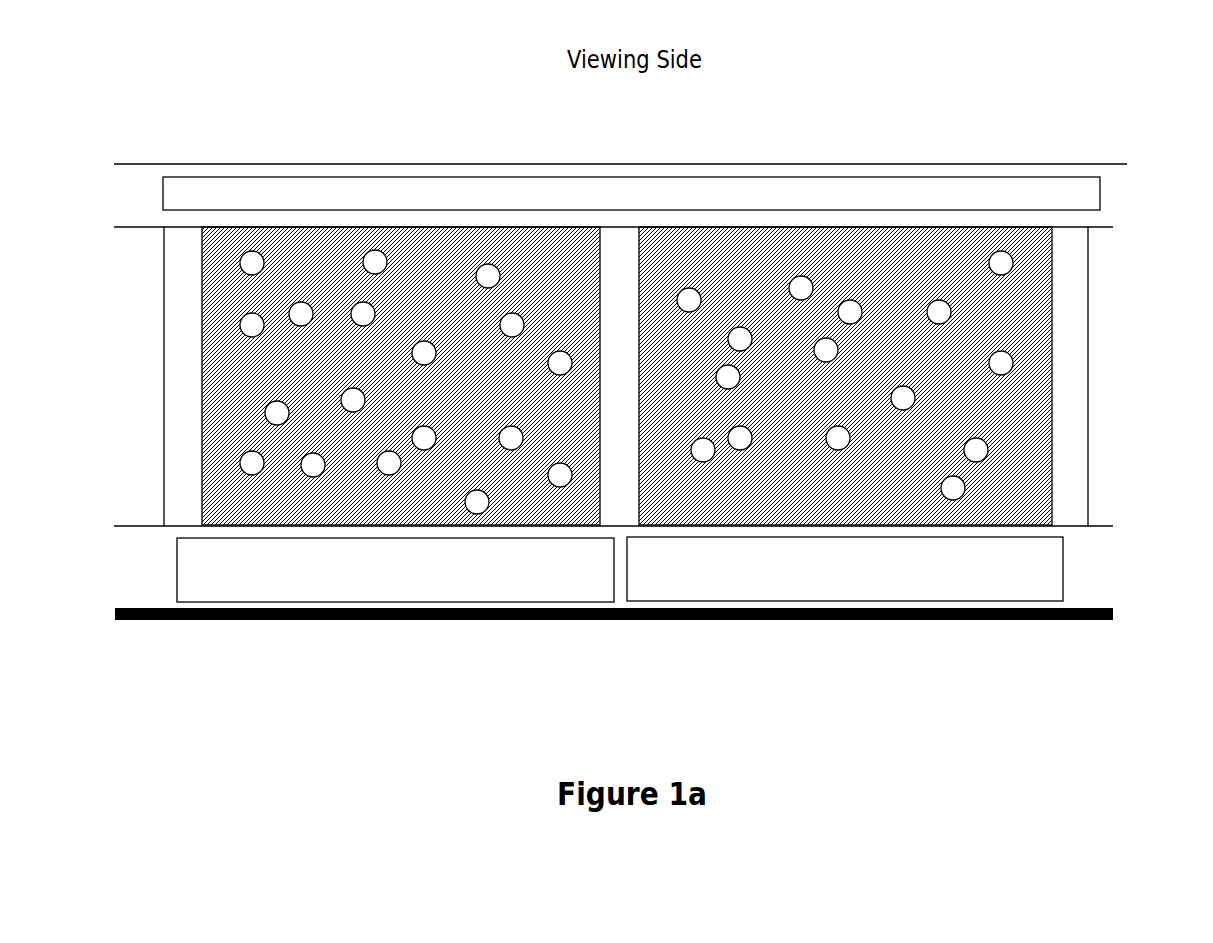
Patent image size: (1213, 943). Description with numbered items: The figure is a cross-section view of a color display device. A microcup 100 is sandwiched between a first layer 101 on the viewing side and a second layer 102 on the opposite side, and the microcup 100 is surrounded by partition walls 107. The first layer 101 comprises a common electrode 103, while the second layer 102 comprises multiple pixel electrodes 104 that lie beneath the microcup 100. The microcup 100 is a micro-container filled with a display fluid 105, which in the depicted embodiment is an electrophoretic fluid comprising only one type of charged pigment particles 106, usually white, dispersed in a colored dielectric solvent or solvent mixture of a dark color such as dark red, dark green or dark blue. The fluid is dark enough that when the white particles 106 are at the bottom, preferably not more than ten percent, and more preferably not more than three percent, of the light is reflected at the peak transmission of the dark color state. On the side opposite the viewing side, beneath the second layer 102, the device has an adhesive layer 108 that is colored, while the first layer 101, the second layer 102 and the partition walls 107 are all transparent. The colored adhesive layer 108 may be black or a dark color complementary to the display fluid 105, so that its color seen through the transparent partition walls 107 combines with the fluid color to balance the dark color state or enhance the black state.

The microcup 100 is at (139, 352).
The first layer 101 is at (118, 191).
The second layer 102 is at (132, 577).
The common electrode 103 is at (631, 193).
The pixel electrodes 104 is at (620, 569).
The display fluid 105 is at (1036, 312).
The charged pigment particles 106 is at (914, 389).
The partition walls 107 is at (1074, 463).
The adhesive layer 108 is at (664, 634).